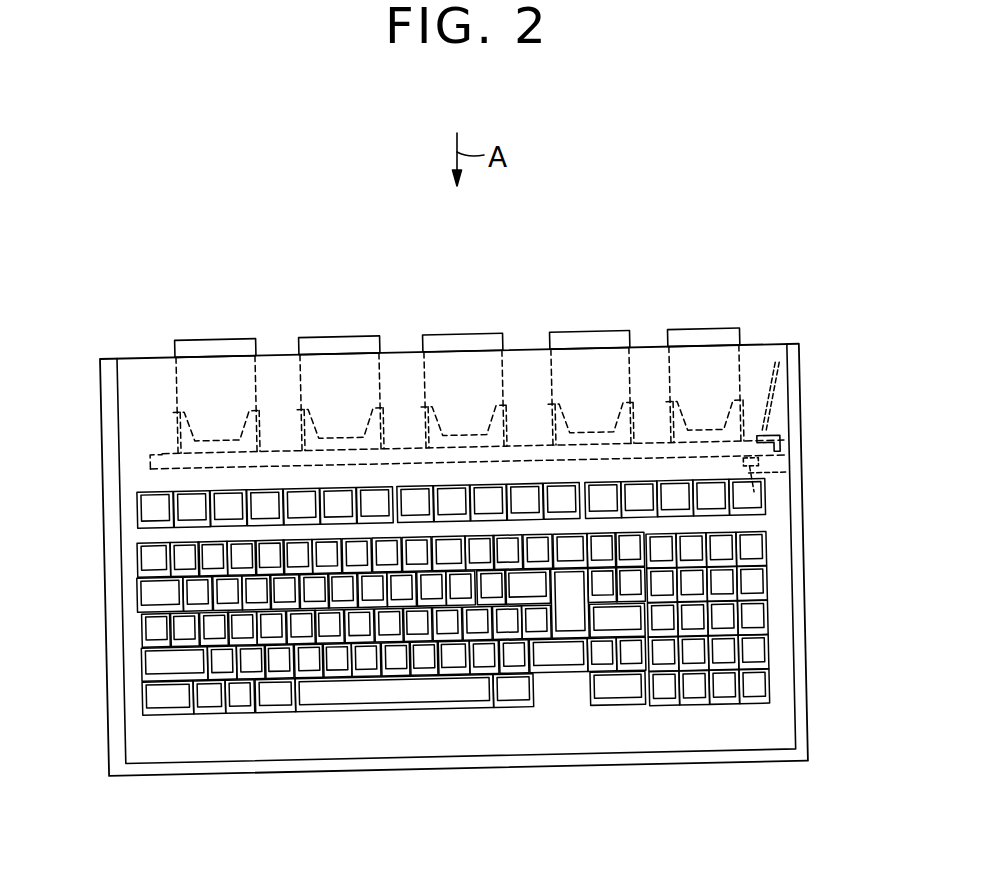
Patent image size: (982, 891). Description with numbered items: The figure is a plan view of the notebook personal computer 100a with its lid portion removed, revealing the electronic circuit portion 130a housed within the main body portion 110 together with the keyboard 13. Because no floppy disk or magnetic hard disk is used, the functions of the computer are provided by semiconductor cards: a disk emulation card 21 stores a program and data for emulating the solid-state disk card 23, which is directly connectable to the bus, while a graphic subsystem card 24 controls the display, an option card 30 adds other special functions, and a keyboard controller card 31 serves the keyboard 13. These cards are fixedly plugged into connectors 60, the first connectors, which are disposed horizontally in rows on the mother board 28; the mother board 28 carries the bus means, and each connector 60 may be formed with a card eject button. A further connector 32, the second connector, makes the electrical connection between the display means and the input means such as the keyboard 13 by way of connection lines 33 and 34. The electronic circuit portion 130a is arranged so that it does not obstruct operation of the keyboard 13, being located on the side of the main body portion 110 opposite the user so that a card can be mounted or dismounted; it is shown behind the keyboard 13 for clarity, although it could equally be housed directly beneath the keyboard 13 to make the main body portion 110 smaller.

The keyboard 13 is at (762, 550).
The disk emulation card 21 is at (461, 334).
The solid-state disk card 23 is at (589, 334).
The graphic subsystem card 24 is at (337, 339).
The option card 30 is at (219, 339).
The keyboard controller card 31 is at (700, 330).
The connector 32 is at (773, 436).
The connection line 33 is at (773, 386).
The connection line 34 is at (788, 477).
The connector 60 is at (176, 414).
The mother board 28 is at (150, 455).
The main body portion 110 is at (108, 673).
The electronic circuit portion 130a is at (147, 471).
The notebook personal computer 100a is at (806, 695).